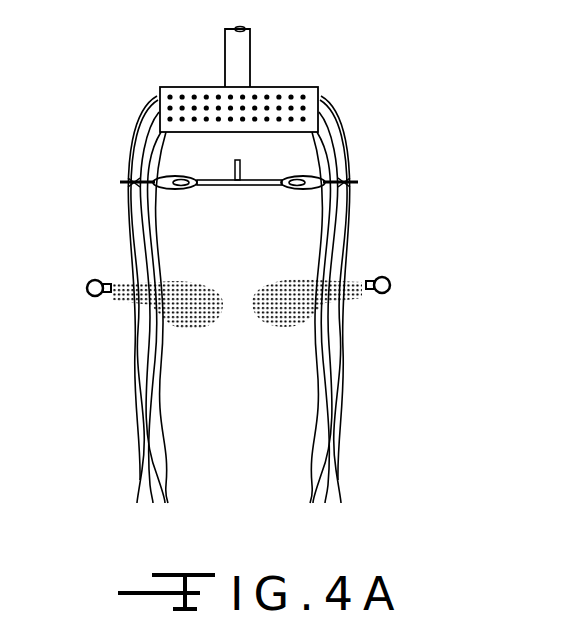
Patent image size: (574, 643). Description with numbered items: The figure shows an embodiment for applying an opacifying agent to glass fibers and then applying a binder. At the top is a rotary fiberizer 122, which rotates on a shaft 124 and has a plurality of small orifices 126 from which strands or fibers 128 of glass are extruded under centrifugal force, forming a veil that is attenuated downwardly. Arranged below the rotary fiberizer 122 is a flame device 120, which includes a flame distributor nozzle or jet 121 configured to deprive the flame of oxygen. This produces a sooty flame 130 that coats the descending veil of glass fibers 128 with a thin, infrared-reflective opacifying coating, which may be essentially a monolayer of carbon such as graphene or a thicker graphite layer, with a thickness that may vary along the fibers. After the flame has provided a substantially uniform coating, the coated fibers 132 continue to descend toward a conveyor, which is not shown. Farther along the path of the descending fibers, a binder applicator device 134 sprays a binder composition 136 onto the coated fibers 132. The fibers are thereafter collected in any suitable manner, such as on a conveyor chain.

The flame device 120 is at (352, 126).
The flame distributor nozzle or jet 121 is at (212, 188).
The rotary fiberizer 122 is at (322, 84).
The shaft 124 is at (245, 50).
The small orifices 126 is at (183, 95).
The strands or fibers 128 is at (403, 158).
The sooty flame 130 is at (96, 299).
The coated fibers 132 is at (340, 229).
The binder applicator device 134 is at (384, 294).
The binder composition 136 is at (278, 334).